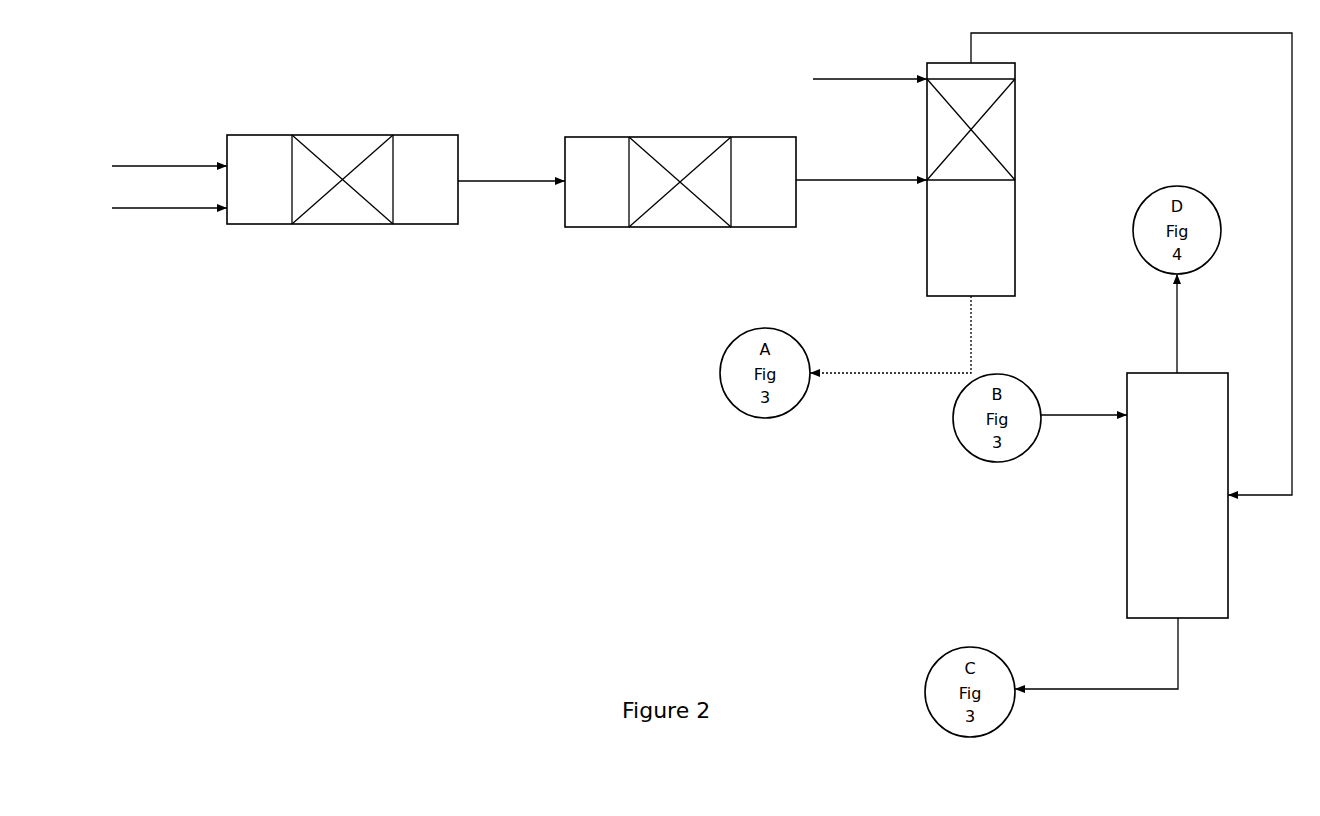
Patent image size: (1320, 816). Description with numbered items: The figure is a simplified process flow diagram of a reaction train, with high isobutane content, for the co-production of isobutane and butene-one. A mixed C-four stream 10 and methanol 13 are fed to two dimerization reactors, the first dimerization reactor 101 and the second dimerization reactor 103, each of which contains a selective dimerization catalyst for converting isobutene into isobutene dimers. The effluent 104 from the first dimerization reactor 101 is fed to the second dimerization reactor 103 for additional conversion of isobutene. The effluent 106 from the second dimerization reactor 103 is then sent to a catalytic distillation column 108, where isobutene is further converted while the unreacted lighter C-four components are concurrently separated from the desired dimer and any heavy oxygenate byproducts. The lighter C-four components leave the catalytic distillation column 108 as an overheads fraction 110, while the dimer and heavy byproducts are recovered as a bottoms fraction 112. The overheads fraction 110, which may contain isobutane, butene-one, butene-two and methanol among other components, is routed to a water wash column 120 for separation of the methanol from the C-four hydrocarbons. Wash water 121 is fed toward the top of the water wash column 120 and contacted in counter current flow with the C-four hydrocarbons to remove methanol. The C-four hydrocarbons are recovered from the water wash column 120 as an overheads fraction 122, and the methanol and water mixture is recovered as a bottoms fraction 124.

The mixed C4 stream 10 is at (169, 152).
The methanol 13 is at (169, 222).
The first dimerization reactor 101 is at (342, 179).
The effluent from the first dimerization reactor 104 is at (511, 200).
The second dimerization reactor 103 is at (680, 182).
The effluent from the second dimerization reactor 106 is at (861, 198).
The catalytic distillation column 108 is at (914, 179).
The overheads fraction 110 is at (1131, 264).
The bottoms fraction 112 is at (890, 334).
The water wash column 120 is at (1177, 495).
The wash water 121 is at (1084, 400).
The overheads fraction 122 is at (1202, 323).
The bottoms fraction 124 is at (1096, 653).